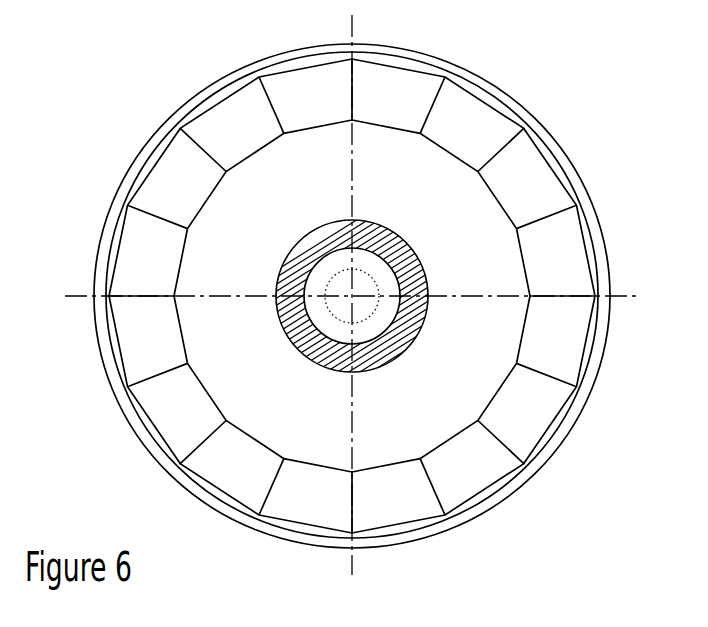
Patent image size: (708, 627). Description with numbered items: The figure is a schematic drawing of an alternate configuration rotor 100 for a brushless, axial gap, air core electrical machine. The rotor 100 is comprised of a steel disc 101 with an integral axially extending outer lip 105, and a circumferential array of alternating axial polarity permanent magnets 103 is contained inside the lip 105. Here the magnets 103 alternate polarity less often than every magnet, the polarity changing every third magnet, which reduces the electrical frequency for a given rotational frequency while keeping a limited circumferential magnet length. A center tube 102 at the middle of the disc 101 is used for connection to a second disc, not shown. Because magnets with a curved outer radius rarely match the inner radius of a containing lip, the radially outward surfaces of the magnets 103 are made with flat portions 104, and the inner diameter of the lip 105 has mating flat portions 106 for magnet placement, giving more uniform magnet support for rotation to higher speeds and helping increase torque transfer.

The alternate configuration rotor 100 is at (130, 75).
The steel disc 101 is at (352, 296).
The center tube 102 is at (426, 277).
The permanent magnets 103 is at (197, 219).
The flat portions 104 is at (147, 167).
The outer lip 105 is at (564, 158).
The mating flat portions 106 is at (418, 80).